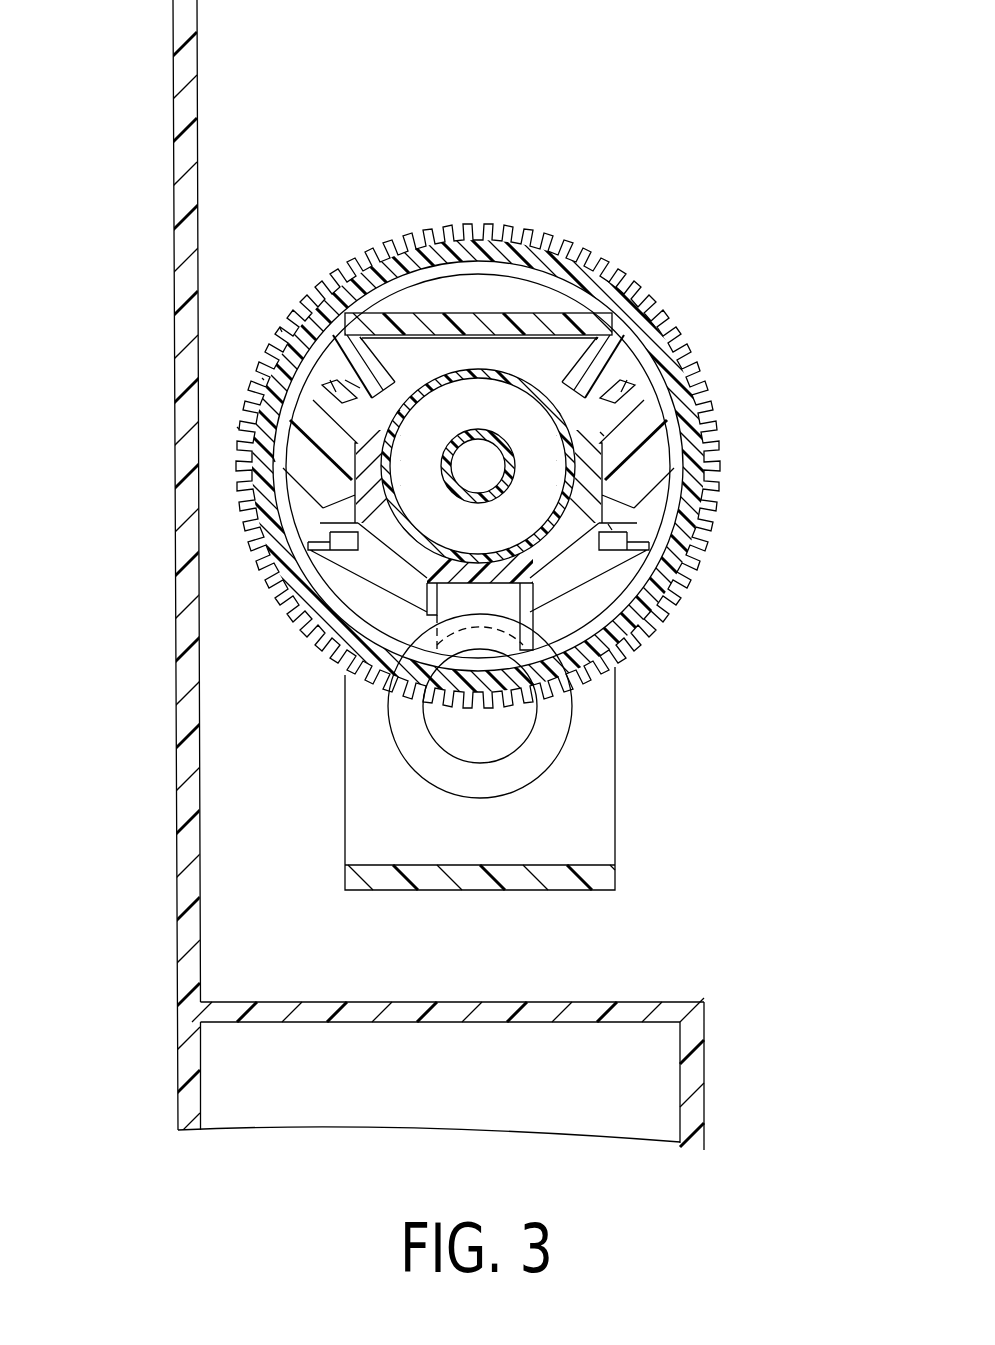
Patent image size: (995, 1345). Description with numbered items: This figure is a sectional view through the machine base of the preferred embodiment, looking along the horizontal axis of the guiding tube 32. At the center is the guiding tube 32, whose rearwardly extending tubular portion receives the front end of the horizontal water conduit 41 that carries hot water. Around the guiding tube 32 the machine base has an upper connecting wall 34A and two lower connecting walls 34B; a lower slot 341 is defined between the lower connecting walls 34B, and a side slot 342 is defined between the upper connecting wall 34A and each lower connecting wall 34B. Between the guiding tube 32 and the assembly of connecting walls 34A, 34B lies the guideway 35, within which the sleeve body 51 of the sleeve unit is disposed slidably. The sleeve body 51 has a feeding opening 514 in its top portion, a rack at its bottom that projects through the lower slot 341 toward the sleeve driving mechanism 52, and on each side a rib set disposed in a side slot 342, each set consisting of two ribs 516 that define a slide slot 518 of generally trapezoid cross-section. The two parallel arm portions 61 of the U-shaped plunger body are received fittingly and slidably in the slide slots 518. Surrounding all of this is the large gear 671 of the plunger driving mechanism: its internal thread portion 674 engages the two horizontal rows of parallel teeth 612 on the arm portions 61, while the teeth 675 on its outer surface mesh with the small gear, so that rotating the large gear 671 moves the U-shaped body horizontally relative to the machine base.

The horizontal guiding tube 32 is at (493, 373).
The upper connecting wall 34A is at (457, 318).
The lower connecting walls 34B is at (400, 568).
The lower slot 341 is at (563, 683).
The side slots 342 is at (340, 360).
The guideway 35 is at (362, 360).
The horizontal water conduit 41 is at (503, 440).
The sleeve body 51 is at (548, 461).
The feeding opening 514 is at (425, 355).
The ribs 516 is at (630, 390).
The slide slot 518 is at (600, 432).
The sleeve driving mechanism 52 is at (468, 742).
The arm portions 61 is at (325, 480).
The teeth 612 is at (273, 457).
The large gear 671 is at (262, 378).
The internal thread portion 674 is at (282, 330).
The teeth 675 is at (237, 427).